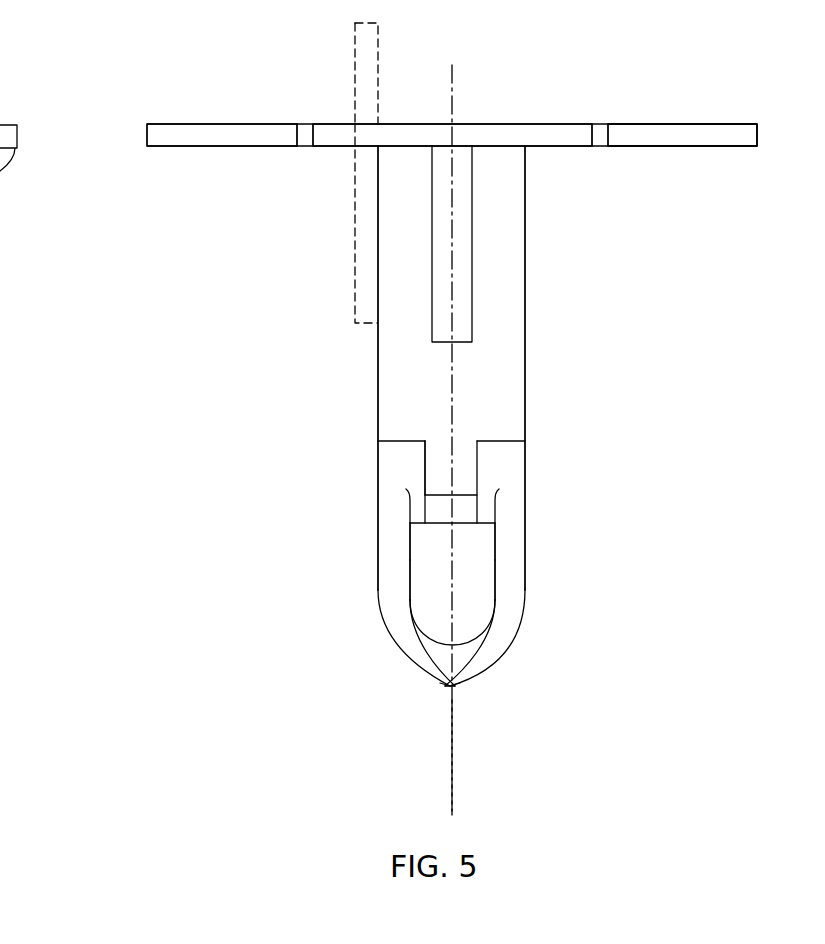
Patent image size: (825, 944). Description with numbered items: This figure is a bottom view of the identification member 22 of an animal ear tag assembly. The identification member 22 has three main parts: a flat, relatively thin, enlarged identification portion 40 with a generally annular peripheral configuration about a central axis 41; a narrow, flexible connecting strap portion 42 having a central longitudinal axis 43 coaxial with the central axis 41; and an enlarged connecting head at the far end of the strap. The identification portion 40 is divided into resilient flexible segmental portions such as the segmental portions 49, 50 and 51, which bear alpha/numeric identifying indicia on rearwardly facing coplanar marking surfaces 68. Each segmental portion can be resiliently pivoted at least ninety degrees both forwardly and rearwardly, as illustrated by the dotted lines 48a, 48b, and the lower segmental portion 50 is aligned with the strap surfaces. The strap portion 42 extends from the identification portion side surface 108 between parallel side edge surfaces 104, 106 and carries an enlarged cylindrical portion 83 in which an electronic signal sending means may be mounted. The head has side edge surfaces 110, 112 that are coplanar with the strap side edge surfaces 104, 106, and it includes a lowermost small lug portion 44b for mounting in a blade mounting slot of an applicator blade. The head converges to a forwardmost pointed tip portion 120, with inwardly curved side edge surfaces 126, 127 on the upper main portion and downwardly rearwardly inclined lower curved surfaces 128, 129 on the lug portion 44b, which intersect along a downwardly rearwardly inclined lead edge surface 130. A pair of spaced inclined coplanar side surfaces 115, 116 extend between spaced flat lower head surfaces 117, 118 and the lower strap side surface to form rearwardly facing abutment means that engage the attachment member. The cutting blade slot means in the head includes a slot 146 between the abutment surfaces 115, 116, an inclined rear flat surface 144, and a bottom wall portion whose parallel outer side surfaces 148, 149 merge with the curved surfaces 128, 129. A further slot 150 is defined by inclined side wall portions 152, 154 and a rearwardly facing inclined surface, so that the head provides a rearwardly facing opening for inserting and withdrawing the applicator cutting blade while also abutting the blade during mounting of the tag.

The identification member 22 is at (252, 287).
The identification portion 40 is at (757, 146).
The central axis 41 is at (452, 88).
The flexible strap portion 42 is at (500, 275).
The central longitudinal axis 43 is at (452, 773).
The lug portion 44b is at (493, 592).
The dotted line 48a is at (352, 240).
The dotted line 48b is at (352, 71).
The segmental portion 49 is at (698, 135).
The segmental portion 50 is at (525, 134).
The segmental portion 51 is at (186, 147).
The marking surfaces 68 is at (645, 123).
The enlarged cylindrical portion 83 is at (455, 207).
The side edge surface 104 is at (527, 377).
The side edge surface 106 is at (378, 343).
The identification portion side surface 108 is at (313, 147).
The side edge surface 110 is at (530, 513).
The side edge surface 112 is at (410, 508).
The inclined coplanar side surface 115 is at (396, 441).
The inclined coplanar side surface 116 is at (506, 441).
The lower head surface 117 is at (388, 474).
The lower head surface 118 is at (500, 472).
The pointed tip portion 120 is at (450, 686).
The inwardly curved side edge surface 126 is at (510, 635).
The inwardly curved side edge surface 127 is at (385, 620).
The lower curved surface 128 is at (413, 638).
The lower curved surface 129 is at (490, 650).
The lead edge surface 130 is at (455, 665).
The inclined rear flat surface 144 is at (457, 505).
The slot 146 is at (440, 467).
The outer side surface 148 is at (407, 562).
The outer side surface 149 is at (497, 562).
The slot 150 is at (462, 500).
The inclined side wall portion 152 is at (409, 520).
The inclined side wall portion 154 is at (498, 518).